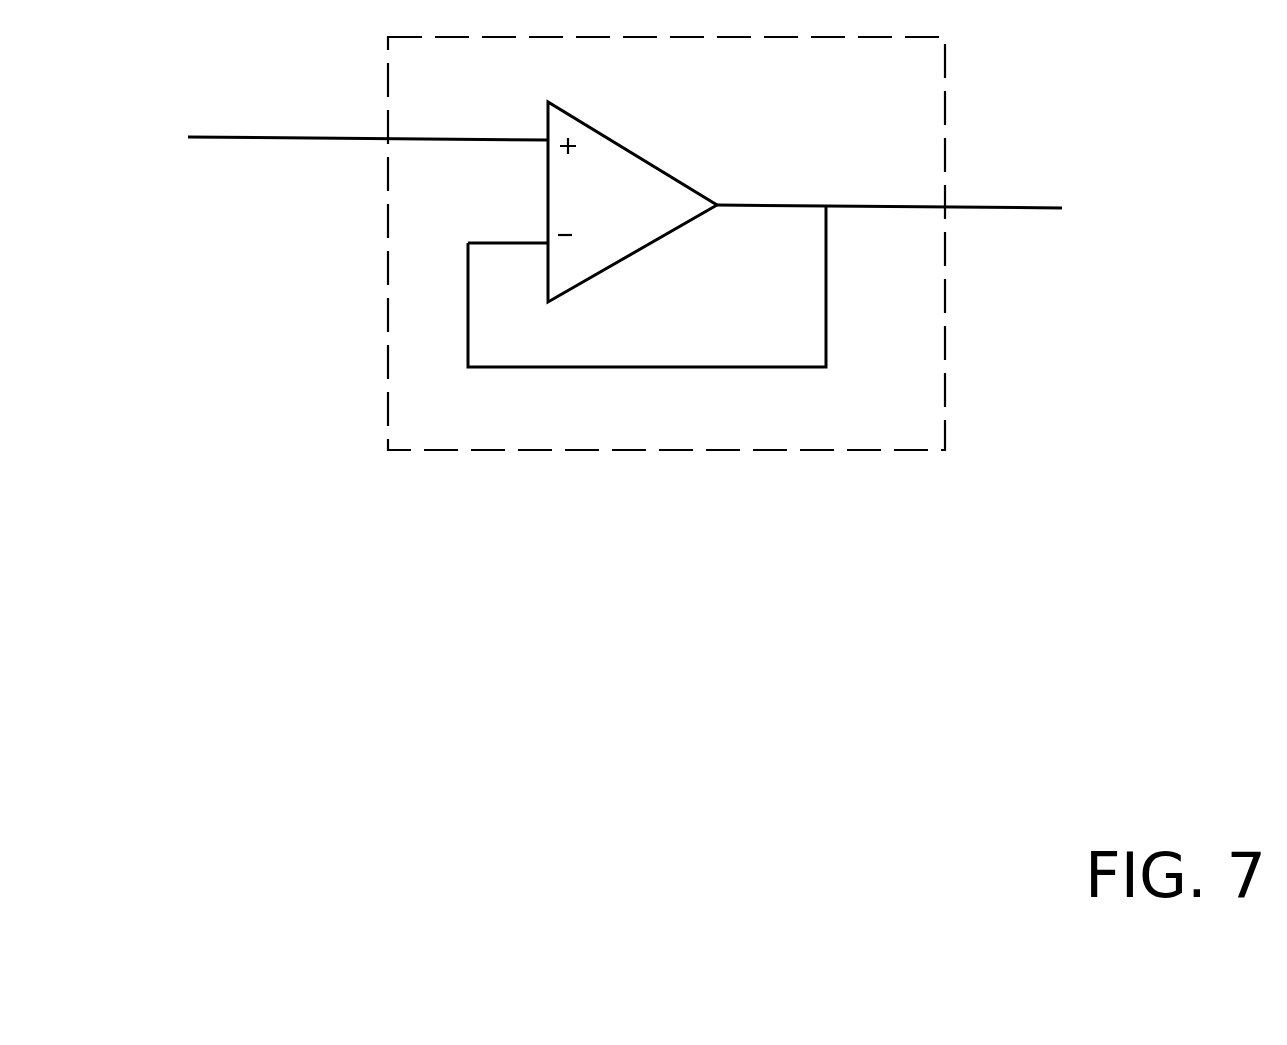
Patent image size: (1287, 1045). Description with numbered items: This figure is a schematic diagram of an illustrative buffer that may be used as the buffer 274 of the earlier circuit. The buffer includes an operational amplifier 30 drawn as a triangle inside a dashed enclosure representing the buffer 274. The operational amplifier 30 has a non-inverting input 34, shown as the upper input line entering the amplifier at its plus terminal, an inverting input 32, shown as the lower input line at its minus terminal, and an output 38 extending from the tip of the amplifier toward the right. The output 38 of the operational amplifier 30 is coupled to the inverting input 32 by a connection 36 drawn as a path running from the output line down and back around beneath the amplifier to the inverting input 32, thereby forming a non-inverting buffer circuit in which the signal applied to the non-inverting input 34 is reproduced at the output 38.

The buffer 274 is at (641, 452).
The operational amplifier 30 is at (652, 218).
The inverting input 32 is at (534, 261).
The non-inverting input 34 is at (533, 132).
The feedback loop 36 is at (686, 369).
The output 38 is at (727, 190).